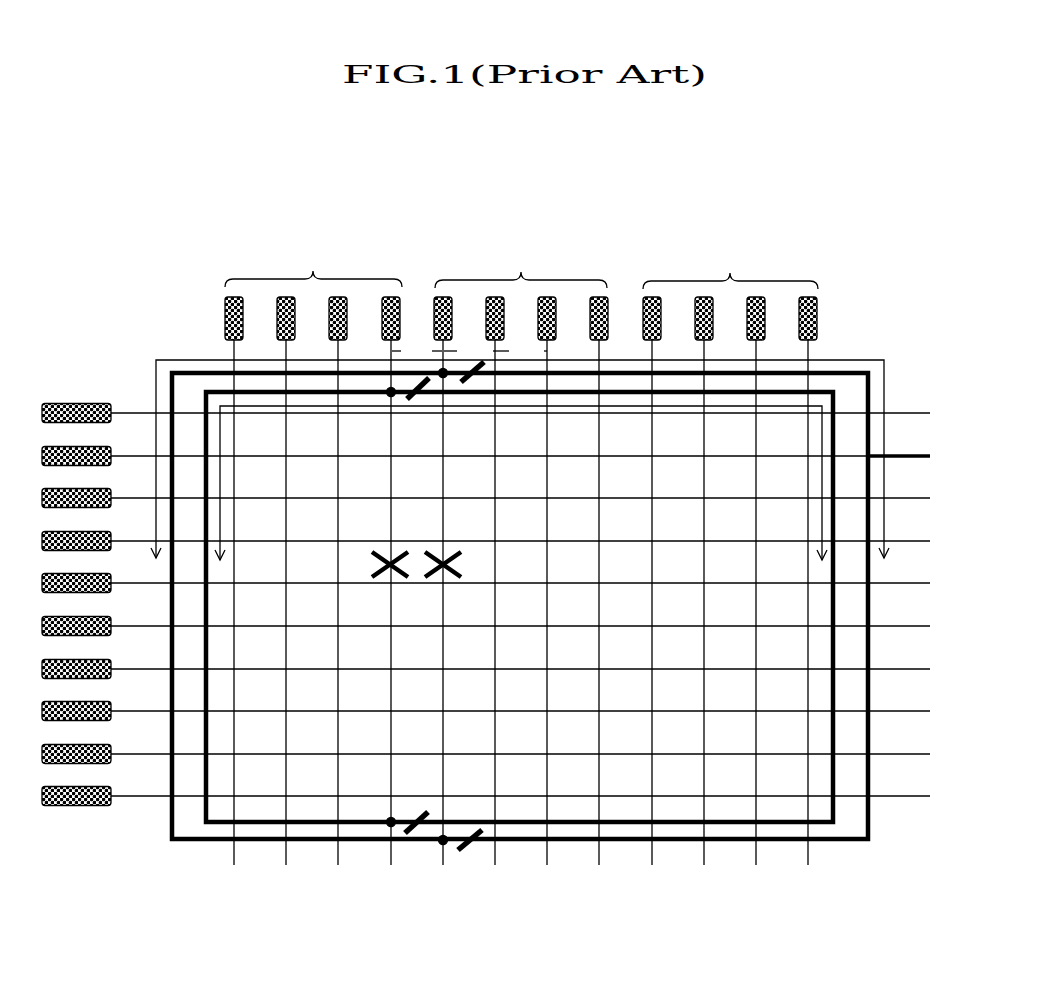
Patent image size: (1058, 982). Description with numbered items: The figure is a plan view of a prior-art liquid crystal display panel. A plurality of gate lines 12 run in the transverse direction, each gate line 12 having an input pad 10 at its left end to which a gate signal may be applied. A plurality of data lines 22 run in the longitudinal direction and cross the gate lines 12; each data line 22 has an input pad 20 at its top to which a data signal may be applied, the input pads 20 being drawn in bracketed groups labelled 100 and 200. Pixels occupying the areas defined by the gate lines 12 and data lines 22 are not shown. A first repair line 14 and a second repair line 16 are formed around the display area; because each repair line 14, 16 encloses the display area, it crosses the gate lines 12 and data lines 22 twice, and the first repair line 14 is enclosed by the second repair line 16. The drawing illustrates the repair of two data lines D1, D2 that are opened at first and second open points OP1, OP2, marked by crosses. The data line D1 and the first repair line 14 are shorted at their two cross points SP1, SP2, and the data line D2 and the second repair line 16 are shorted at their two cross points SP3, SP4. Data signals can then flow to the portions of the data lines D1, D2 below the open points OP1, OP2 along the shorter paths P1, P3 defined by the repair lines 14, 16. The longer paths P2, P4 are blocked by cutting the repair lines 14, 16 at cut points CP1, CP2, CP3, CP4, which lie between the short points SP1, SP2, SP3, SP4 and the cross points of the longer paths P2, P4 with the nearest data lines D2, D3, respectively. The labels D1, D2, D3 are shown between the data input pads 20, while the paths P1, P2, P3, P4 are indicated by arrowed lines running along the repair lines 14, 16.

The input pad 10 is at (77, 403).
The gate line 12 is at (137, 412).
The first repair line 14 is at (202, 810).
The second repair line 16 is at (167, 841).
The input pad 20 is at (225, 309).
The data line 22 is at (232, 344).
The first pad groups 100 is at (521, 263).
The second pad group 200 is at (521, 264).
The path P1 is at (368, 483).
The path P2 is at (674, 483).
The path P3 is at (321, 459).
The path P4 is at (725, 459).
The data line D1 is at (417, 353).
The data line D2 is at (476, 353).
The data line D3 is at (528, 353).
The short point SP1 is at (387, 396).
The short point SP2 is at (385, 826).
The short point SP3 is at (446, 378).
The short point SP4 is at (441, 844).
The cut point CP1 is at (416, 402).
The cut point CP2 is at (414, 834).
The cut point CP3 is at (473, 386).
The cut point CP4 is at (472, 845).
The open point OP1 is at (386, 571).
The open point OP2 is at (440, 573).